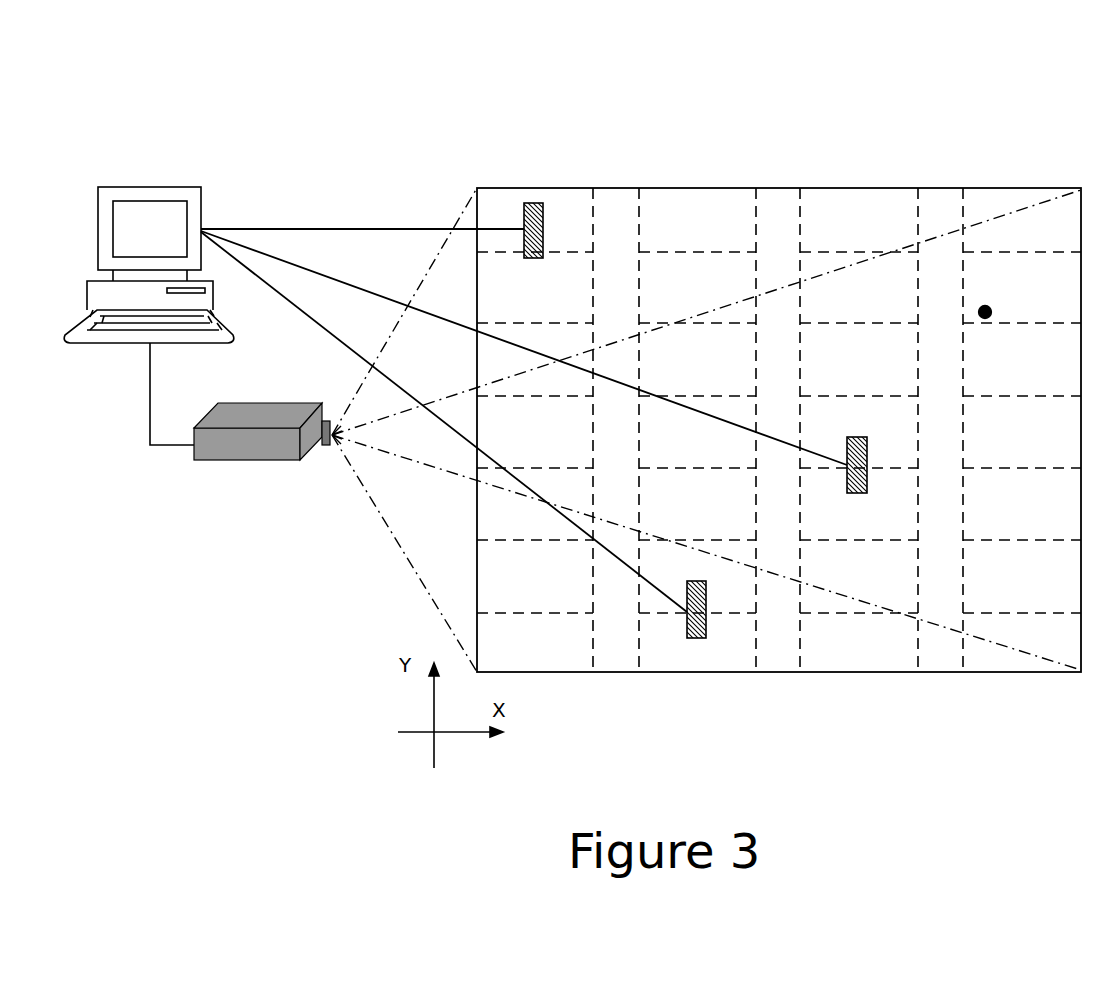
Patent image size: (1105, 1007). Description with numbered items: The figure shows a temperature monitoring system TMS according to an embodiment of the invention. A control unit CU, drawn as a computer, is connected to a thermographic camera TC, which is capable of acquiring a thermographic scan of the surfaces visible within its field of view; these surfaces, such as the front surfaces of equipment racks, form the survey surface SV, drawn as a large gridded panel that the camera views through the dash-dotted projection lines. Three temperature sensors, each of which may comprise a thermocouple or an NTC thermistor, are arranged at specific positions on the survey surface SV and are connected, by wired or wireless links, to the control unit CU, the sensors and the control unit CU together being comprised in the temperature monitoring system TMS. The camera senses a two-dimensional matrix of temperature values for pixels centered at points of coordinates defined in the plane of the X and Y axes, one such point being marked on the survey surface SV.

The temperature monitoring system TMS is at (218, 117).
The control unit CU is at (150, 187).
The thermographic camera TC is at (227, 460).
The survey surface SV is at (777, 188).